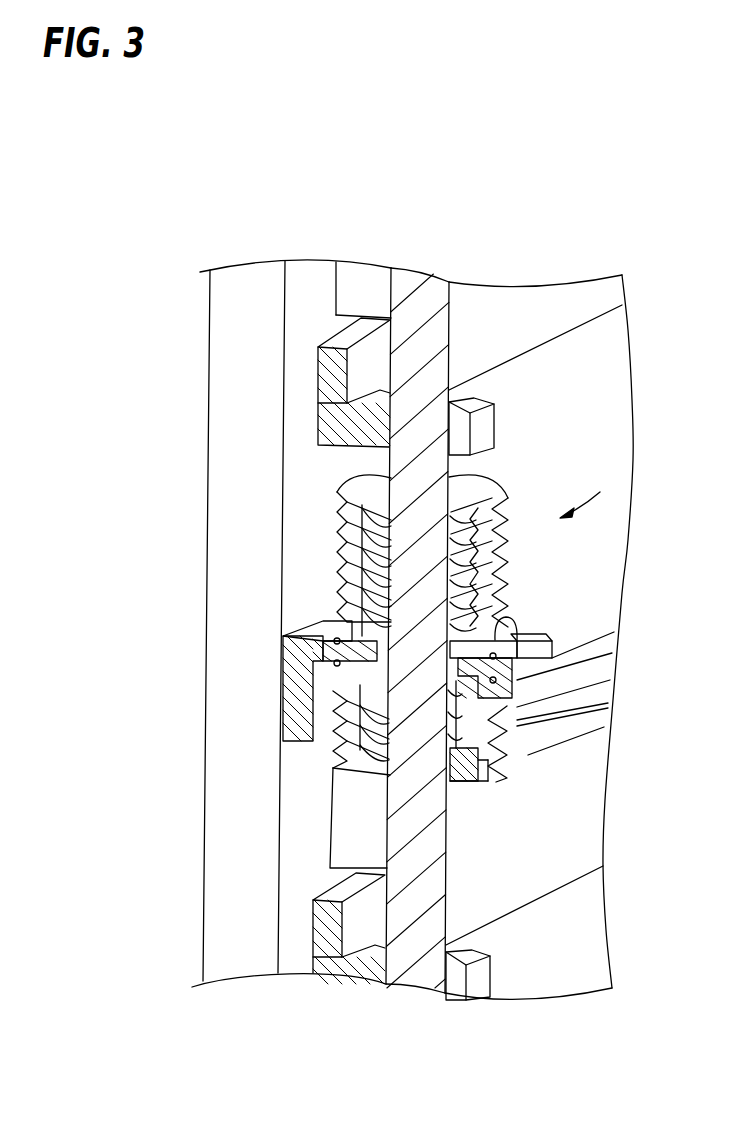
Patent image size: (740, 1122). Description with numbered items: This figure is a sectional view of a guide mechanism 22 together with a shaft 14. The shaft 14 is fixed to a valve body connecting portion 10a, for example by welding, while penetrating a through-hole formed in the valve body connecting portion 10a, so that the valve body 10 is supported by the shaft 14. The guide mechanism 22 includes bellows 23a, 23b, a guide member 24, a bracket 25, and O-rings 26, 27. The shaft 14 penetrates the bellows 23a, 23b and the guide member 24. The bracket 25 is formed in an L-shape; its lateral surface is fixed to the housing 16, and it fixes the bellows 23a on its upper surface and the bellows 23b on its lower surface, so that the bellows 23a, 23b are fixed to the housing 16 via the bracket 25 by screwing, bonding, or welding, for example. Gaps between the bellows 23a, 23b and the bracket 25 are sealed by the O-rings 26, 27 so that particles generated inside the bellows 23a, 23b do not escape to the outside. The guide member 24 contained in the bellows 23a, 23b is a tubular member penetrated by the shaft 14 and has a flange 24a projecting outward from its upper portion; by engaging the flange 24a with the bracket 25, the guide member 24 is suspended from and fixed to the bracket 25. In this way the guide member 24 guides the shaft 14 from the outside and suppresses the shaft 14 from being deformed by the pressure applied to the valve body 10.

The valve body 10 is at (535, 340).
The valve body connecting portion 10a is at (496, 424).
The shaft 14 is at (418, 988).
The housing 16 is at (227, 540).
The guide mechanism 22 is at (593, 494).
The bellows 23a is at (500, 480).
The bellows 23b is at (490, 782).
The guide member 24 is at (505, 620).
The flange 24a is at (508, 685).
The bracket 25 is at (302, 741).
The O-ring 26 is at (332, 638).
The O-ring 27 is at (333, 666).